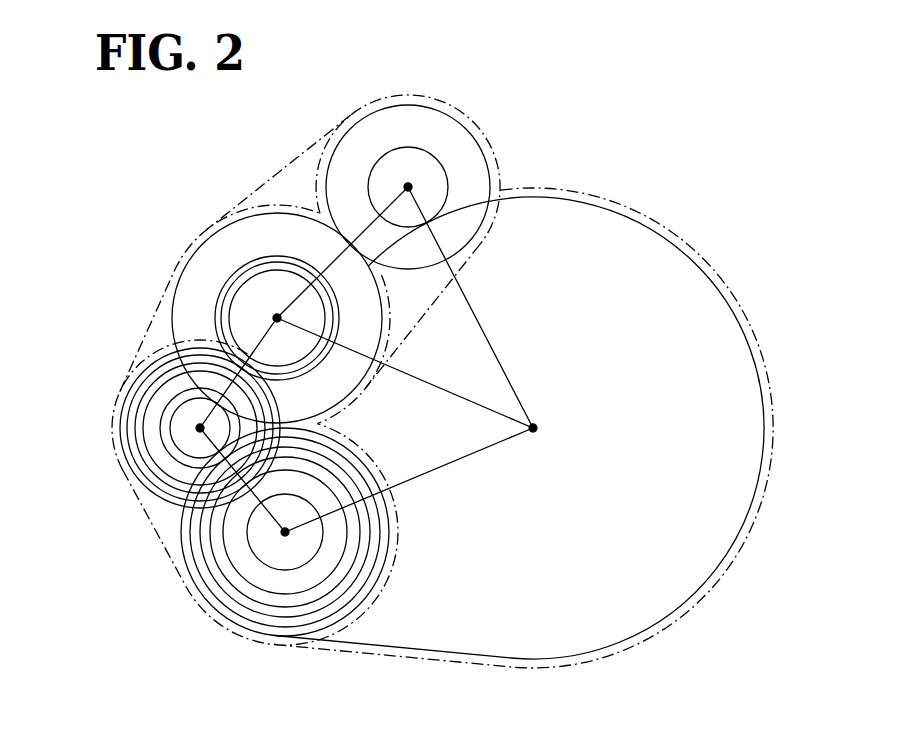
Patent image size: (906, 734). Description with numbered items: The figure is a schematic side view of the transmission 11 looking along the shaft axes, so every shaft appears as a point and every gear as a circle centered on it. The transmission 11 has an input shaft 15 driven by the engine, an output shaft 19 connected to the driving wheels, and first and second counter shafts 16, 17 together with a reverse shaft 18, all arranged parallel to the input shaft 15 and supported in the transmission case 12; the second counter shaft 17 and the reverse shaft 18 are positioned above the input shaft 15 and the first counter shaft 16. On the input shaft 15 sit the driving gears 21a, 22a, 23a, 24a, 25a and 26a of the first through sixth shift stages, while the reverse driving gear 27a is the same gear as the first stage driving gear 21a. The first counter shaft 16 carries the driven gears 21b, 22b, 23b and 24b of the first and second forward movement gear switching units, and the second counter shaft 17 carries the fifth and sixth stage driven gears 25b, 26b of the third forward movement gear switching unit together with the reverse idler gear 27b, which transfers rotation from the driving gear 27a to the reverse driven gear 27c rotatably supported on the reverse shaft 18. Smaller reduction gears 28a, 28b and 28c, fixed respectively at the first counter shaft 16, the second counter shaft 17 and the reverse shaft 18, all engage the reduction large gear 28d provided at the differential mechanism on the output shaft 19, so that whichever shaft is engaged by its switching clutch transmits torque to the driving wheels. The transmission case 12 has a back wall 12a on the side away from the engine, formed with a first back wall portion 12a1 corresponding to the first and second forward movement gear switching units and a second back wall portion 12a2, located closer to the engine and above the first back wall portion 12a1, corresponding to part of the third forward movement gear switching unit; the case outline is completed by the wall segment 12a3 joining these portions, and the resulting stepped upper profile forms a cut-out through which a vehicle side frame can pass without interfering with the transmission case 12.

The transmission 11 is at (655, 140).
The transmission case 12 is at (441, 381).
The back wall 12a is at (405, 337).
The first back wall portion 12a1 is at (160, 305).
The second back wall portion 12a2 is at (258, 202).
The belt span 12a3 is at (286, 158).
The input shaft 15 is at (200, 428).
The first counter shaft 16 is at (285, 532).
The second counter shaft 17 is at (277, 318).
The reverse shaft 18 is at (408, 187).
The output shaft 19 is at (533, 428).
The driving gear of the 1st shift stage gear set 21a is at (143, 355).
The driving gear of the 2nd shift stage gear set 22a is at (157, 400).
The driving gear of the 3rd shift stage gear set 23a is at (140, 422).
The driving gear of the 4th shift stage gear set 24a is at (130, 466).
The driving gear of the 5th shift stage gear set 25a is at (200, 428).
The driving gear of the 6th shift stage gear set 26a is at (122, 440).
The driving gear of the reverse gear set 27a is at (181, 405).
The driven gear of the 1st shift stage gear set 21b is at (192, 582).
The driven gear of the 2nd shift stage gear set 22b is at (232, 603).
The driven gear of the 3rd shift stage gear set 23b is at (245, 622).
The driven gear of the 4th shift stage gear set 24b is at (292, 638).
The driven gear of the 5th shift stage gear set 25b is at (217, 291).
The driven gear of the 6th shift stage gear set 26b is at (263, 260).
The idler gear 27b is at (216, 226).
The driven gear of the reverse gear set 27c is at (449, 108).
The reduction small gear 28a is at (323, 543).
The reduction small gear 28b is at (310, 268).
The reduction small gear 28c is at (405, 147).
The reduction large gear 28d is at (680, 241).